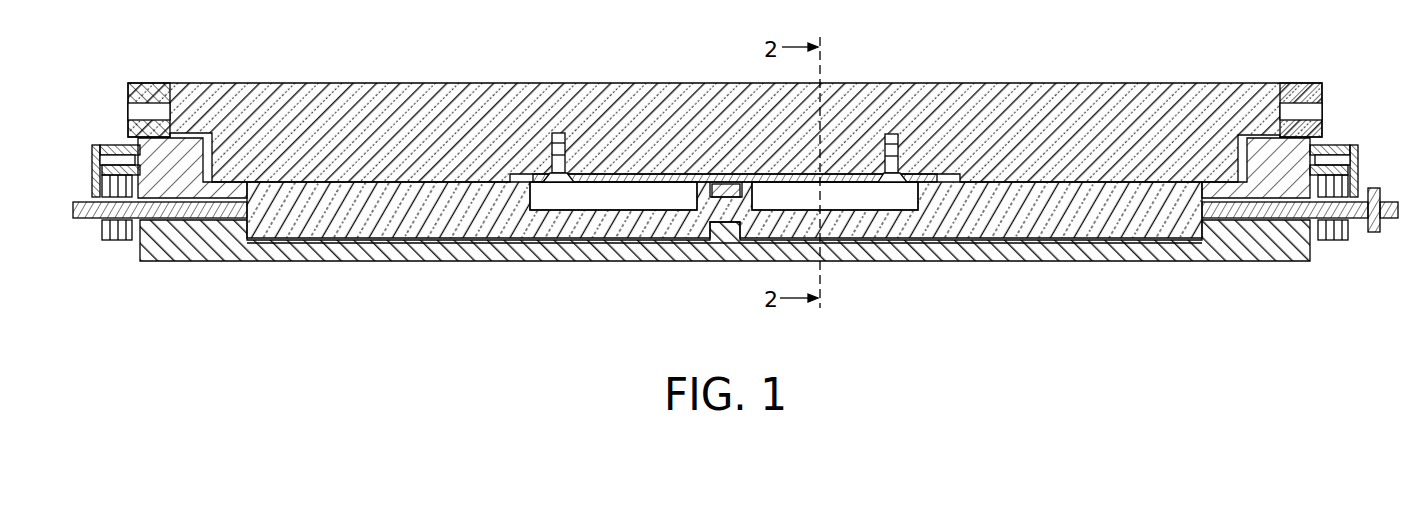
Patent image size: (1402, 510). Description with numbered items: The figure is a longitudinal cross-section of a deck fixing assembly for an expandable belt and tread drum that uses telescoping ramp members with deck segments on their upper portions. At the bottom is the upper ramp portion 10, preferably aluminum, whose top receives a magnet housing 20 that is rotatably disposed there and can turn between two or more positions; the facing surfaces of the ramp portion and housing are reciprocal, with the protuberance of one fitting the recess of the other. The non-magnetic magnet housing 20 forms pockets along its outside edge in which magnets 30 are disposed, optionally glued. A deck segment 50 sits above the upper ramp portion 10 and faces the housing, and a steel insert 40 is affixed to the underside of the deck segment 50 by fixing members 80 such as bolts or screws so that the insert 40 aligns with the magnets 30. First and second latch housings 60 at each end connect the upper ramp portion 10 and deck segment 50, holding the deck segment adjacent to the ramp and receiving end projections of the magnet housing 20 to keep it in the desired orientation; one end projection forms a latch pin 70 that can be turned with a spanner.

The upper ramp portion 10 is at (315, 262).
The magnet housing 20 is at (410, 240).
The magnets 30 is at (631, 205).
The insert 40 is at (672, 175).
The deck segment 50 is at (240, 83).
The latch housings 60 is at (125, 132).
The latch pin 70 is at (1375, 233).
The fixing members 80 is at (558, 132).